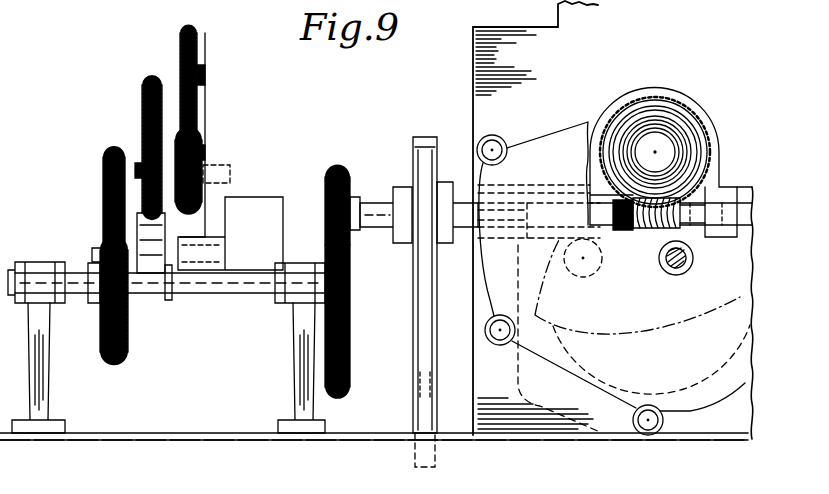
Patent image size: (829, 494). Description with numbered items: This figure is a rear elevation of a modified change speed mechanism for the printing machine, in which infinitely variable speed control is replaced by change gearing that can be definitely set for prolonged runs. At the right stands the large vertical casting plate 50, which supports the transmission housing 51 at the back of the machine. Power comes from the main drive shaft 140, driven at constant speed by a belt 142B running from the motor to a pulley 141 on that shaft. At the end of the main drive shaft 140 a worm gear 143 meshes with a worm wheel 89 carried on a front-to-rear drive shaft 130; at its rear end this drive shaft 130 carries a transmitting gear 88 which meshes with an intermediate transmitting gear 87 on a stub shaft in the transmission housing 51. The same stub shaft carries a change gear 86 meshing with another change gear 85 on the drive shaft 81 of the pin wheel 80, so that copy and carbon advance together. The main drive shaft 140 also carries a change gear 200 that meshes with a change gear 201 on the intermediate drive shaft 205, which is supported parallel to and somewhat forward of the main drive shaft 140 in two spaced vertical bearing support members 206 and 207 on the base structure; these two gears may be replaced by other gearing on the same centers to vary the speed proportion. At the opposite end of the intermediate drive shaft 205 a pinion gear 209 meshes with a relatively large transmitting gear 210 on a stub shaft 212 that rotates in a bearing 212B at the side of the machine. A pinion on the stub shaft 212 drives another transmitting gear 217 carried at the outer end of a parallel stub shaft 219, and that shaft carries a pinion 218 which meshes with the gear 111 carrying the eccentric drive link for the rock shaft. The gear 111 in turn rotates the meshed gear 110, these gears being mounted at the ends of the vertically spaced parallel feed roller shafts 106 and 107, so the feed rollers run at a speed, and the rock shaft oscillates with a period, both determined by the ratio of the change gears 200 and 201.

The casting plate 50 is at (524, 64).
The transmission housing 51 is at (582, 362).
The pin wheel 80 is at (695, 397).
The drive shaft 81 is at (678, 268).
The change gear 85 is at (674, 328).
The change gear 86 is at (577, 276).
The intermediate transmitting gear 87 is at (604, 330).
The transmitting gear 88 is at (588, 152).
The worm wheel 89 is at (670, 115).
The drive shaft 130 is at (630, 136).
The main drive shaft 140 is at (439, 244).
The pulley 141 is at (413, 137).
The belt 142B is at (422, 400).
The worm gear 143 is at (654, 235).
The change gear 200 is at (338, 177).
The change gear 201 is at (349, 328).
The intermediate drive shaft 205 is at (240, 293).
The bearing support member 206 is at (45, 370).
The bearing support member 207 is at (292, 383).
The pinion gear 209 is at (128, 314).
The transmitting gear 210 is at (103, 163).
The stub shaft 212 is at (100, 250).
The bearing 212B is at (185, 237).
The transmitting gear 217 is at (142, 90).
The pinion 218 is at (205, 193).
The stub shaft 219 is at (137, 165).
The gear 110 is at (180, 38).
The shaft 107 is at (205, 66).
The gear 111 is at (199, 118).
The shaft 106 is at (202, 140).